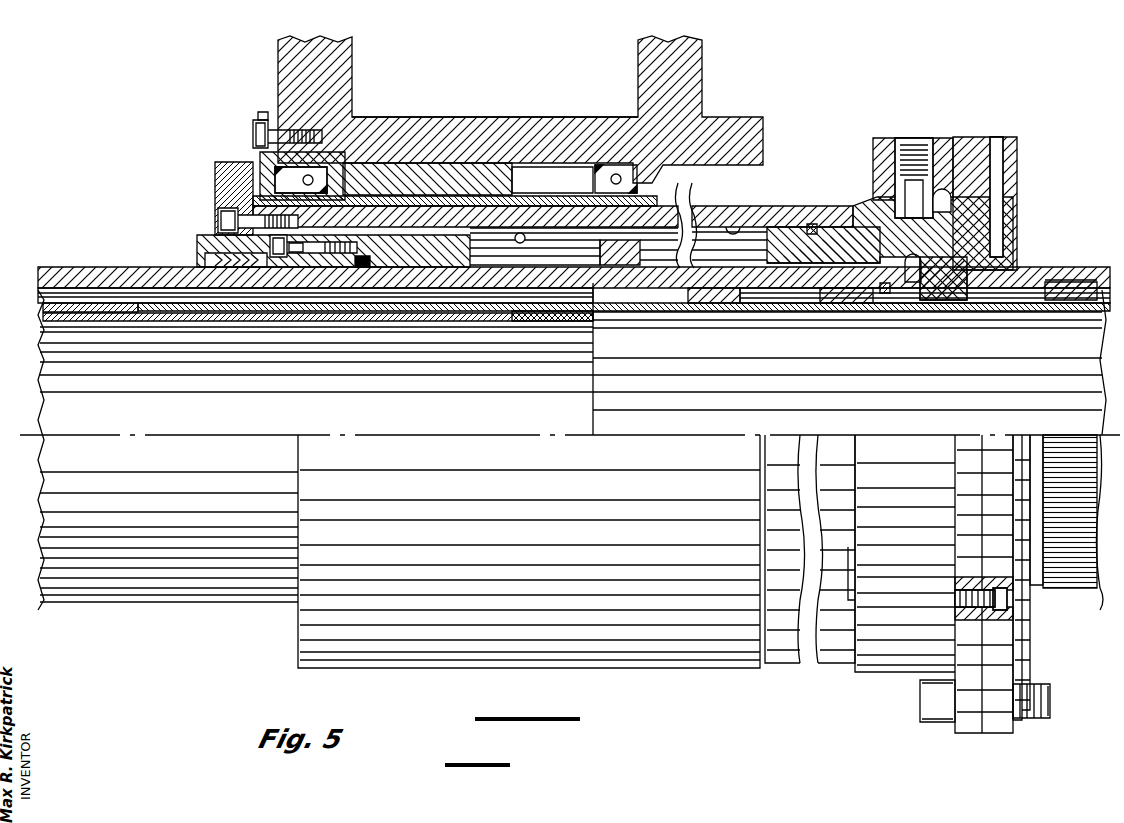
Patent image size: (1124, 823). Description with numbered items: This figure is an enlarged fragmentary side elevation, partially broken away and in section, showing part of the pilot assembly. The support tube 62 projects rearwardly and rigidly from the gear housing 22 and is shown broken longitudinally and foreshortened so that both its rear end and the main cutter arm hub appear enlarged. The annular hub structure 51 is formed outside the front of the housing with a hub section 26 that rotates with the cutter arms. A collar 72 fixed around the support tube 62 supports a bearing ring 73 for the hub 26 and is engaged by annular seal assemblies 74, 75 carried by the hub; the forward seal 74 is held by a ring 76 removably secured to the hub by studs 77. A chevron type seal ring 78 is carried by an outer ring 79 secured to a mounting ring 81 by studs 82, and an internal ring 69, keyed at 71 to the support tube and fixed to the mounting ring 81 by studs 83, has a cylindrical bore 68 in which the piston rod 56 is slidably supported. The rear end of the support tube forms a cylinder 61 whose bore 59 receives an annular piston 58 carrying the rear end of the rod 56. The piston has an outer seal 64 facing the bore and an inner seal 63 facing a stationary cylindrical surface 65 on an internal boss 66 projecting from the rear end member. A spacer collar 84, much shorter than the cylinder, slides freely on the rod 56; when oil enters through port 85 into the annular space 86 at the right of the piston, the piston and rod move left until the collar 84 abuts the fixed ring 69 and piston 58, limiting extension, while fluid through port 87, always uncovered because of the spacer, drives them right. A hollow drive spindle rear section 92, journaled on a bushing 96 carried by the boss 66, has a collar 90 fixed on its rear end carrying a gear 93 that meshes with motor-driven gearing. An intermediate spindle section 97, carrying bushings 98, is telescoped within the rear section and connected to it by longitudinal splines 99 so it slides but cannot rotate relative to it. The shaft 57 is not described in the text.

The gear housing 22 is at (370, 662).
The hub section 26 is at (517, 114).
The hub structure 51 is at (418, 128).
The piston rod 56 is at (405, 282).
The shaft 57 is at (178, 598).
The annular piston 58 is at (836, 228).
The bore 59 is at (741, 225).
The cylinder 61 is at (708, 208).
The support tube 62 is at (541, 212).
The inner peripheral seal 63 is at (882, 294).
The outer peripheral seal 64 is at (812, 225).
The cylindrical surface 65 is at (905, 292).
The internal boss 66 is at (842, 302).
The cylindrical bore 68 is at (404, 272).
The internal ring 69 is at (455, 272).
The key 71 is at (365, 256).
The collar 72 is at (418, 198).
The bearing ring 73 is at (506, 180).
The forward seal assembly 74 is at (334, 168).
The seal assembly 75 is at (602, 179).
The ring 76 is at (272, 118).
The studs 77 is at (253, 134).
The chevron type seal ring 78 is at (205, 262).
The outer ring 79 is at (206, 241).
The mounting ring 81 is at (294, 260).
The studs 82 is at (218, 218).
The studs 83 is at (280, 260).
The spacer collar 84 is at (574, 258).
The port 85 is at (914, 140).
The annular space 86 is at (928, 285).
The port 87 is at (526, 238).
The collar 90 is at (1098, 590).
The drive spindle rear section 92 is at (640, 308).
The gear 93 is at (1065, 280).
The bushing 96 is at (700, 308).
The intermediate hollow drive spindle section 97 is at (133, 316).
The bushings 98 is at (540, 315).
The longitudinal splines 99 is at (64, 315).